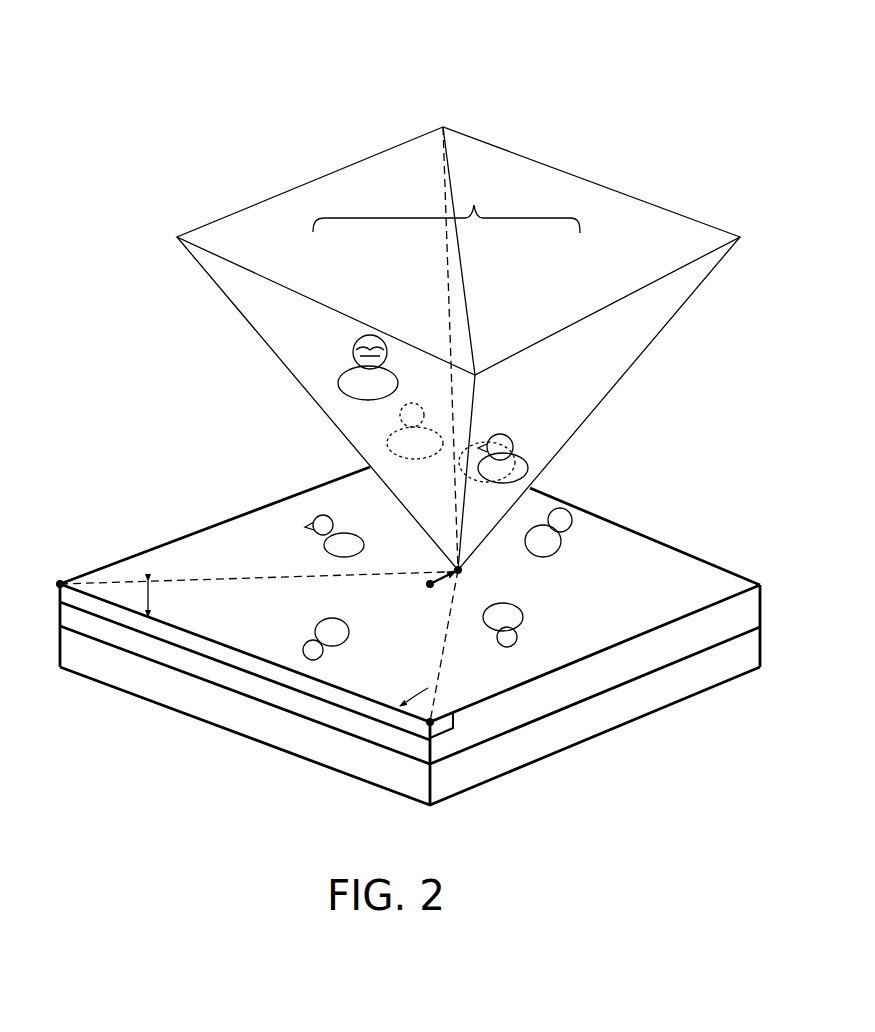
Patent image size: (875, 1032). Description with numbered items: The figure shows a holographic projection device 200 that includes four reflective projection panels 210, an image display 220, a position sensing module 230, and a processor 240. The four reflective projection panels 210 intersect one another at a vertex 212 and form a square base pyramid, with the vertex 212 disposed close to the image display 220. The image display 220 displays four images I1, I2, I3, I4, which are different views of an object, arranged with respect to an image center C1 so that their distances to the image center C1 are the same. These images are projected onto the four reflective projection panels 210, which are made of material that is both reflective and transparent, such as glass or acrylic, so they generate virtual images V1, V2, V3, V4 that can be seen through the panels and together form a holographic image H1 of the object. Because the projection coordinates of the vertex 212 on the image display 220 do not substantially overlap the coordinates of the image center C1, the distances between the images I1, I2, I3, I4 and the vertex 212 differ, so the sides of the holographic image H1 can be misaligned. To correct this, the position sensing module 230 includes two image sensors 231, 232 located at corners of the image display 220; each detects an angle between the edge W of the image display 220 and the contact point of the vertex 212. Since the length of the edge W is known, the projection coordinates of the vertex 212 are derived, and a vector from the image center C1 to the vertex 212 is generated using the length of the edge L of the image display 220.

The holographic projection device 200 is at (729, 146).
The reflective projection panels 210 is at (218, 237).
The vertex 212 is at (462, 572).
The image display 220 is at (745, 610).
The position sensing module 230 is at (122, 615).
The image sensor 231 is at (60, 580).
The image sensor 232 is at (447, 727).
The processor 240 is at (700, 670).
The holographic image H1 is at (446, 203).
The virtual image V1 is at (350, 383).
The virtual image V2 is at (503, 430).
The virtual image V3 is at (497, 436).
The virtual image V4 is at (415, 412).
The image I1 is at (345, 637).
The image I2 is at (513, 633).
The image I3 is at (563, 518).
The image I4 is at (313, 540).
The edge L is at (688, 612).
The edge W is at (203, 638).
The image center C1 is at (426, 585).